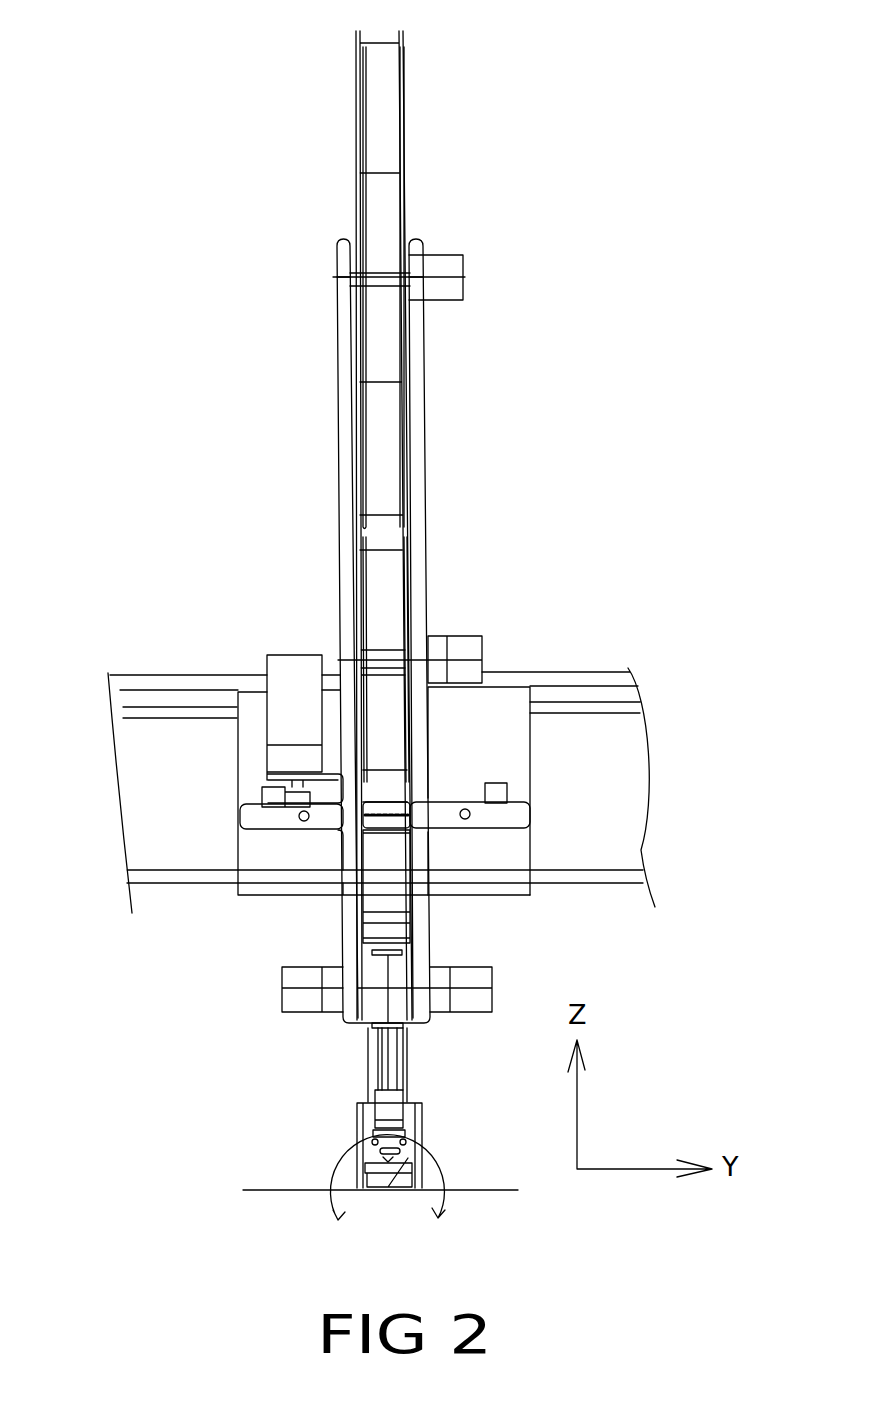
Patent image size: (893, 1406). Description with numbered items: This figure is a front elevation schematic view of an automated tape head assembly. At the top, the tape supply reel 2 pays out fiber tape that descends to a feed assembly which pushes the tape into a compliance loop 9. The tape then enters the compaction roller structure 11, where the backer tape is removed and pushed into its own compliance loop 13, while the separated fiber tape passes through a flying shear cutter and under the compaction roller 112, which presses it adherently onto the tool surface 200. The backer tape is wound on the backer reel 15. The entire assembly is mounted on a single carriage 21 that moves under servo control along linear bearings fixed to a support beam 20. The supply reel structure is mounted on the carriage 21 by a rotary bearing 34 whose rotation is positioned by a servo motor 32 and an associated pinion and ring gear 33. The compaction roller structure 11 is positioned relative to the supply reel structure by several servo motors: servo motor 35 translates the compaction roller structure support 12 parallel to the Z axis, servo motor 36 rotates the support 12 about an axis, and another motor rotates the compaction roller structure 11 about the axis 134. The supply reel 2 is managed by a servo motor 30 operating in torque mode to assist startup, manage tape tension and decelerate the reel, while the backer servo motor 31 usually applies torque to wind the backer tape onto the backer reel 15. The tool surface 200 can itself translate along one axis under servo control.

The tape supply reel 2 is at (348, 78).
The compliance loop 9 is at (366, 1063).
The compaction roller structure 11 is at (345, 1168).
The compaction roller structure support 12 is at (398, 1082).
The compliance loop 13 is at (412, 1068).
The backer reel 15 is at (412, 563).
The support beam 20 is at (587, 673).
The carriage 21 is at (248, 692).
The servo motor 30 is at (472, 267).
The backer servo motor 31 is at (472, 645).
The servo motor 32 is at (303, 662).
The pinion and ring gear 33 is at (515, 795).
The rotary bearing 34 is at (475, 833).
The servo motor 35 is at (478, 976).
The servo motor 36 is at (300, 978).
The compaction roller 112 is at (370, 1186).
The axis 134 is at (445, 1202).
The tool surface 200 is at (253, 1192).